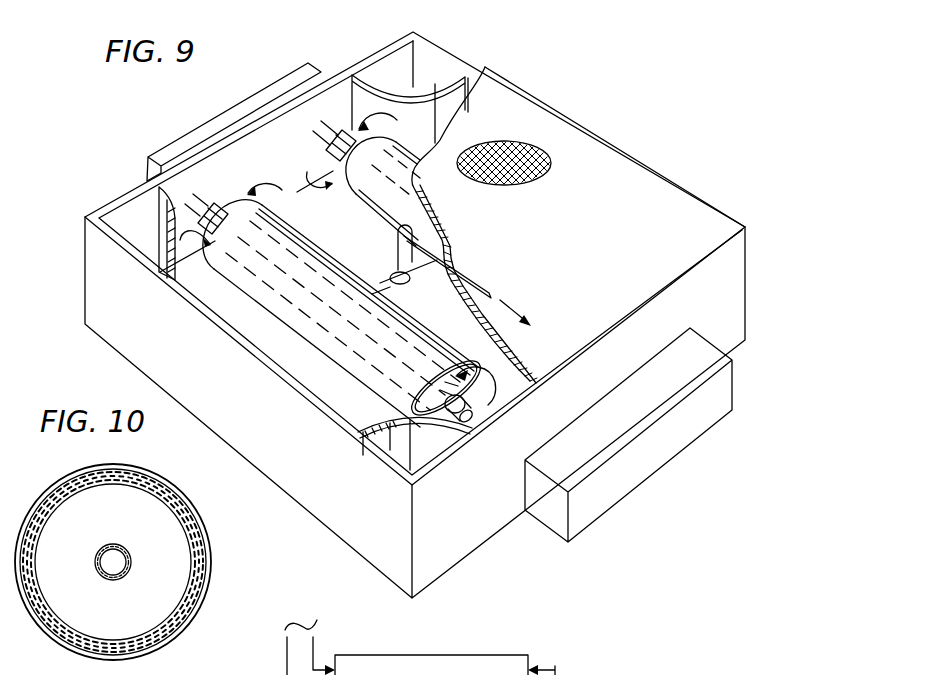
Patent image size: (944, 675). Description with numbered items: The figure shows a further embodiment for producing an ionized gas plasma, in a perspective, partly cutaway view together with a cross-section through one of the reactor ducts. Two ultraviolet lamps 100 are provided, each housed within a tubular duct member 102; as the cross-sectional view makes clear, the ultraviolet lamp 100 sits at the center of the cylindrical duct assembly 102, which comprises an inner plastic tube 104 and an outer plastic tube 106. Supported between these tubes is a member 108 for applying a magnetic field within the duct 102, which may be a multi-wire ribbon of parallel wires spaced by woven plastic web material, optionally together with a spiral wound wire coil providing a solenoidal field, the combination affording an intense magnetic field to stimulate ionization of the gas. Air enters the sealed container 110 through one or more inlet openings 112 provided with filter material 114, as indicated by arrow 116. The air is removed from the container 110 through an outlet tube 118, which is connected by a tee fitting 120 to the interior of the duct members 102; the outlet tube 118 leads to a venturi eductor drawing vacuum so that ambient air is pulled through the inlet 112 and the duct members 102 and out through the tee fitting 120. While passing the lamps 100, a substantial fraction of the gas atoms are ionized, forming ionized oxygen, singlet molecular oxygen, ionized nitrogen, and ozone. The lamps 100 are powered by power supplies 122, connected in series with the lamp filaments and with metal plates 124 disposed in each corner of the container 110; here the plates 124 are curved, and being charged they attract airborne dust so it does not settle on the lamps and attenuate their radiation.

In FIG. 9, the ultraviolet lamp 100 is at (287, 155).
In FIG. 10, the ultraviolet lamp 100 is at (126, 549).
In FIG. 10, the tubular duct member 102 is at (222, 568).
In FIG. 10, the inner plastic tube 104 is at (147, 486).
In FIG. 10, the outer plastic tube 106 is at (158, 480).
In FIG. 10, the member for applying a magnetic field 108 is at (189, 505).
In FIG. 9, the sealed container 110 is at (724, 287).
In FIG. 9, the inlet opening 112 is at (560, 149).
In FIG. 9, the filter material 114 is at (519, 182).
In FIG. 9, the arrow 116 is at (504, 160).
In FIG. 9, the outlet tube 118 is at (478, 279).
In FIG. 9, the tee fitting 120 is at (387, 263).
In FIG. 10, the power supply 122 is at (481, 655).
In FIG. 9, the metal plate 124 is at (378, 80).